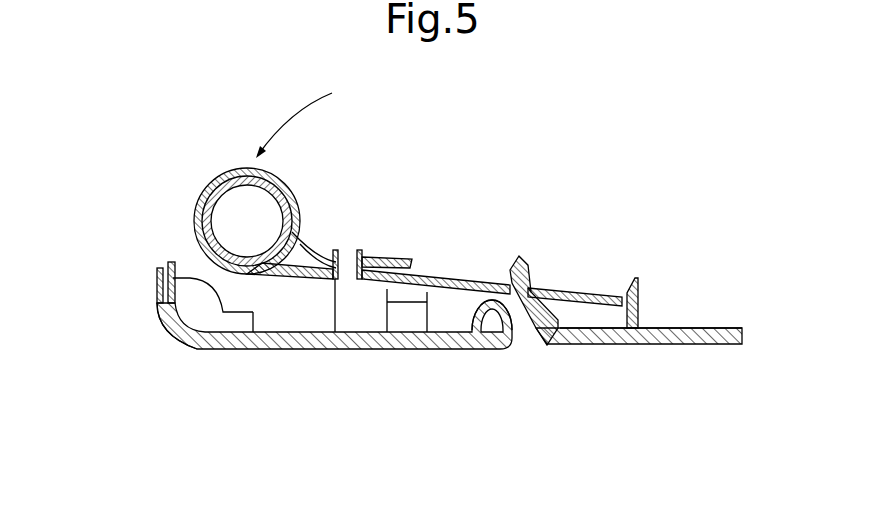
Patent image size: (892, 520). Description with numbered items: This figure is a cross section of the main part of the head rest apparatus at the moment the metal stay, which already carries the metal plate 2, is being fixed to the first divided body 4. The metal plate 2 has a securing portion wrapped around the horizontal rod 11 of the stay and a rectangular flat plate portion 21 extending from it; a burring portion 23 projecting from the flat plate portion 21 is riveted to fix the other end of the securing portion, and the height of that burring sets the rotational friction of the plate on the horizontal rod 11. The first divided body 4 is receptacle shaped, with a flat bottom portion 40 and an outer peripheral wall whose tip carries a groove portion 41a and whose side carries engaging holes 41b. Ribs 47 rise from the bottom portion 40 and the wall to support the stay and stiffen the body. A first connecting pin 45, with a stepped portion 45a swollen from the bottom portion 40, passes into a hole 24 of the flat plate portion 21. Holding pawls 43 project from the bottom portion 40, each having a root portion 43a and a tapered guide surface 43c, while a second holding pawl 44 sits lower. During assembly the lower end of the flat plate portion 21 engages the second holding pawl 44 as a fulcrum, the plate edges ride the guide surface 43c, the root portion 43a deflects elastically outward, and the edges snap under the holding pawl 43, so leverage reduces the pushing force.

The metal plate 2 is at (232, 168).
The horizontal rod 11 is at (233, 185).
The flat plate portion 21 is at (570, 290).
The burring portion 23 is at (364, 250).
The hole 24 is at (531, 290).
The first divided body 4 is at (618, 346).
The bottom portion 40 is at (690, 328).
The groove portion 41a is at (163, 262).
The engaging hole 41b is at (157, 300).
The holding pawl 43 is at (363, 347).
The root portion 43a is at (418, 318).
The tapered guide surface 43c is at (387, 289).
The second holding pawl 44 is at (640, 300).
The first connecting pin 45 is at (512, 258).
The stepped portion 45a is at (477, 346).
The rib 47 is at (216, 302).